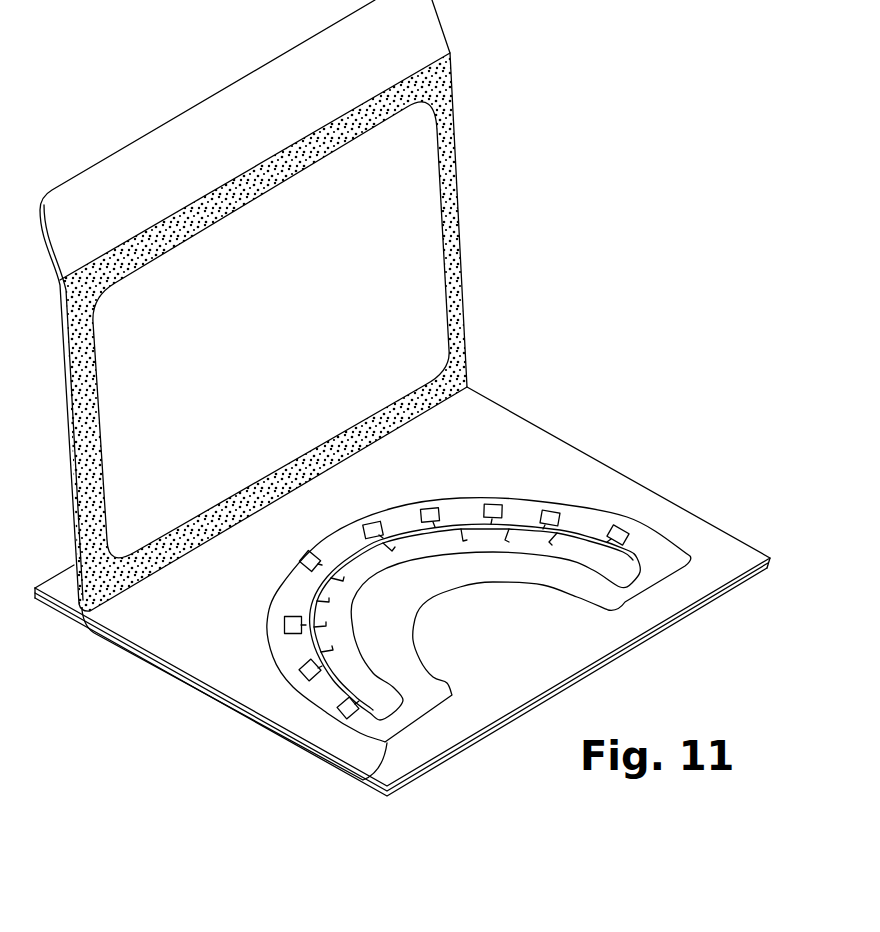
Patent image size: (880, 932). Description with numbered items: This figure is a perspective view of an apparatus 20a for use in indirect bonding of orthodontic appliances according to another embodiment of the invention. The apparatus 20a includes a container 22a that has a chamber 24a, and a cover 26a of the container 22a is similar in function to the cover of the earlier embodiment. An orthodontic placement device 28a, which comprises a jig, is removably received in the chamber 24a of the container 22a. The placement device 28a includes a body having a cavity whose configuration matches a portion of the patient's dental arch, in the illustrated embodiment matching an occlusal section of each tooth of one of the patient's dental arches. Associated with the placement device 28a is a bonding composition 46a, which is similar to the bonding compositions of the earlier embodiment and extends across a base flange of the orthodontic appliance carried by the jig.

The apparatus 20a is at (664, 264).
The container 22a is at (518, 420).
The chamber 24a is at (436, 704).
The cover 26a is at (433, 194).
The orthodontic placement device 28a is at (636, 549).
The bonding composition 46a is at (487, 505).